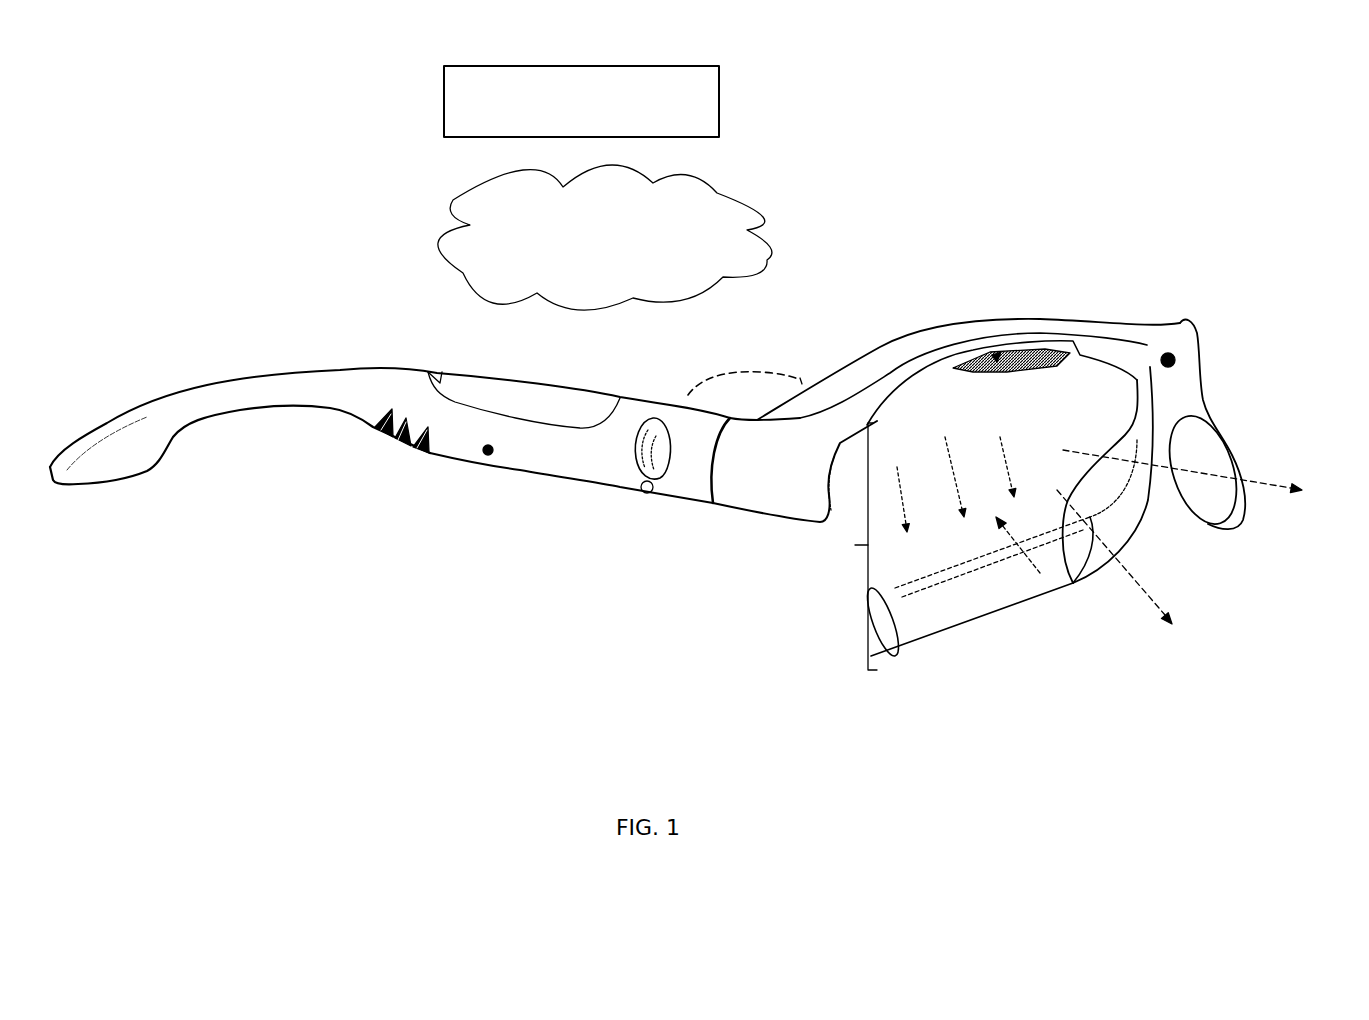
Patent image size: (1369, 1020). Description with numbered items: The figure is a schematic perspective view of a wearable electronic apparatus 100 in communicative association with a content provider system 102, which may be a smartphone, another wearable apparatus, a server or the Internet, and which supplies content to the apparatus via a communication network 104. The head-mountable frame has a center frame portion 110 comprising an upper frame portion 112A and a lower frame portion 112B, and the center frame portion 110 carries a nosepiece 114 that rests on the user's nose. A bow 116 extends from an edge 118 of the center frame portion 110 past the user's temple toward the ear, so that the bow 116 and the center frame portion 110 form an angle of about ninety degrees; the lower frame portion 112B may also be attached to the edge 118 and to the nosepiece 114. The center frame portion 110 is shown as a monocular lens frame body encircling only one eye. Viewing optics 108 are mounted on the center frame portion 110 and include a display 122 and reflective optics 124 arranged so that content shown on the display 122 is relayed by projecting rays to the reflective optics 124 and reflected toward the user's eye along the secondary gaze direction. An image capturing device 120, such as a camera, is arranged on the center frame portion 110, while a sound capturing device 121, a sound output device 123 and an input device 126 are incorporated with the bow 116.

The wearable electronic apparatus 100 is at (272, 180).
The content provider system 102 is at (581, 101).
The communication network 104 is at (605, 237).
The viewing optics 108 is at (838, 546).
The center frame portion 110 is at (978, 308).
The upper frame portion 112A is at (902, 338).
The lower frame portion 112B is at (980, 600).
The nosepiece 114 is at (1213, 398).
The bow 116 is at (290, 373).
The edge of center frame portion 118 is at (726, 520).
The image capturing device 120 is at (1171, 357).
The sound capturing device 121 is at (486, 452).
The display 122 is at (1047, 363).
The sound output device 123 is at (392, 452).
The reflective optics 124 is at (990, 543).
The input device 126 is at (653, 417).